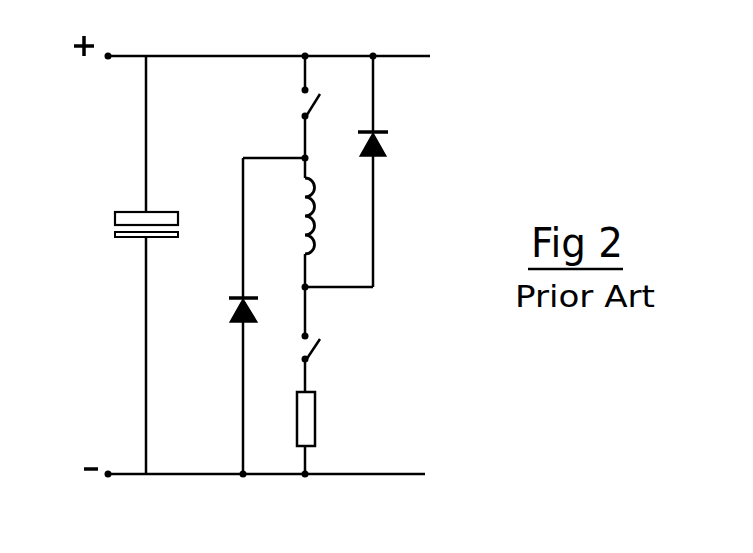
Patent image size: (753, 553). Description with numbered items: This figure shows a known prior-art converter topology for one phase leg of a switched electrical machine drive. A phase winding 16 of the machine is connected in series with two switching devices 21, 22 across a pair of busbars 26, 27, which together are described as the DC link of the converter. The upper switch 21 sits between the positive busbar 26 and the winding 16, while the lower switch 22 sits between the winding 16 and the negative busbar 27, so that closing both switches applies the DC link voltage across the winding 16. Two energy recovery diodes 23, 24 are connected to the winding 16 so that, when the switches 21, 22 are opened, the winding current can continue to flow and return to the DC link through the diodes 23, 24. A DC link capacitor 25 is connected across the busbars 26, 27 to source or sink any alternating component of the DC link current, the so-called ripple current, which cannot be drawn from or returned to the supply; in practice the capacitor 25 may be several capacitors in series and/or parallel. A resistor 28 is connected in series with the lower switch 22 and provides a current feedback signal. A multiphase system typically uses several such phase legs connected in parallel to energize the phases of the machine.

The phase winding 16 is at (322, 199).
The switching device 21 is at (301, 105).
The switching device 22 is at (322, 349).
The energy recovery diode 23 is at (390, 140).
The energy recovery diode 24 is at (232, 305).
The DC link capacitor 25 is at (112, 229).
The busbar 26 is at (220, 56).
The busbar 27 is at (200, 476).
The resistor 28 is at (315, 418).